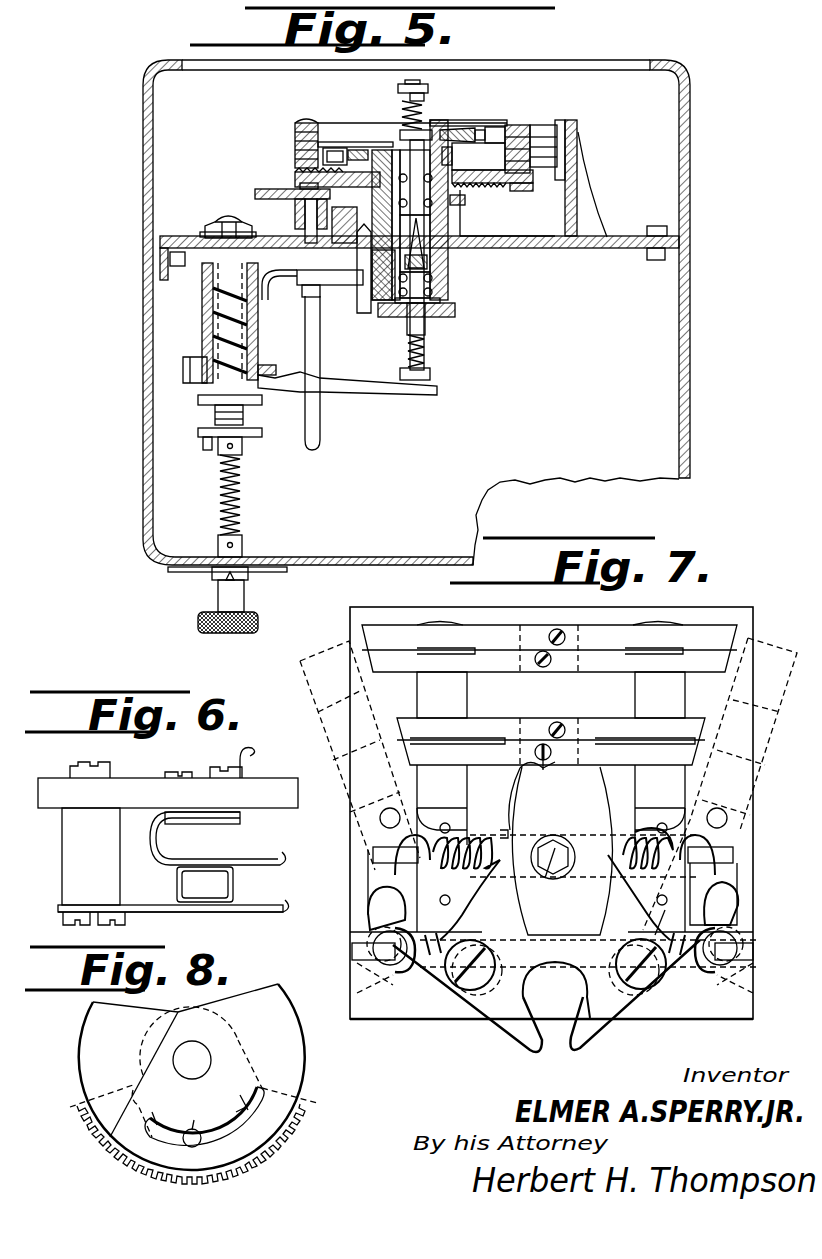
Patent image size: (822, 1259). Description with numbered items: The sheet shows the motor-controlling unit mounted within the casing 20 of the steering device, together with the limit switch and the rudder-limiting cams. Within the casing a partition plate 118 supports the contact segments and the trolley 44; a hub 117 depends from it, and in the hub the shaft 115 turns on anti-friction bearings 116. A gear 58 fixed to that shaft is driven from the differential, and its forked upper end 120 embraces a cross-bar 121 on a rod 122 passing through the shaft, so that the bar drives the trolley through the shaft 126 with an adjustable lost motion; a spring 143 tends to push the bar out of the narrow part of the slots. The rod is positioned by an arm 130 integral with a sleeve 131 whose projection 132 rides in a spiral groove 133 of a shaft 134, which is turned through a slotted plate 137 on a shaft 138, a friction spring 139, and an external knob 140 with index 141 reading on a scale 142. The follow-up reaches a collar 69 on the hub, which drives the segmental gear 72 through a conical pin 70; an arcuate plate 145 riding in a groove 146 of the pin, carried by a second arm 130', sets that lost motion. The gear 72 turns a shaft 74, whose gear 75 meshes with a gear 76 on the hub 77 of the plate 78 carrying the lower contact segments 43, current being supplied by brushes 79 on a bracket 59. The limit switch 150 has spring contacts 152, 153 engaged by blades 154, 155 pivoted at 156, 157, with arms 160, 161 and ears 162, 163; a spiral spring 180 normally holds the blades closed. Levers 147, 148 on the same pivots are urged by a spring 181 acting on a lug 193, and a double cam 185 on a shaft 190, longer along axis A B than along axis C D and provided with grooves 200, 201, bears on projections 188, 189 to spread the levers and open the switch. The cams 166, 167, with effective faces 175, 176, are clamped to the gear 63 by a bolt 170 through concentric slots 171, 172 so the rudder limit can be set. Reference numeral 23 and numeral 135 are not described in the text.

In FIG. 5, the casing 20 is at (679, 430).
In FIG. 5, the nut 23 is at (298, 231).
In FIG. 5, the lower contact segments 43 is at (499, 149).
In FIG. 5, the trolley 44 is at (352, 142).
In FIG. 5, the gear 58 is at (455, 312).
In FIG. 5, the bracket 59 is at (580, 198).
In FIG. 5, the collar 69 is at (450, 283).
In FIG. 5, the pin 70 is at (358, 259).
In FIG. 5, the segmental gear 72 is at (338, 222).
In FIG. 5, the shaft 74 is at (310, 212).
In FIG. 5, the gear 75 is at (258, 193).
In FIG. 5, the gear 76 is at (472, 198).
In FIG. 5, the hub 77 is at (455, 214).
In FIG. 5, the plate 78 is at (556, 178).
In FIG. 5, the brushes 79 is at (545, 125).
In FIG. 5, the shaft 115 is at (410, 352).
In FIG. 5, the anti-friction bearings 116 is at (394, 318).
In FIG. 5, the hub 117 is at (440, 301).
In FIG. 5, the partition plate 118 is at (580, 248).
In FIG. 5, the forked upper end 120 is at (450, 262).
In FIG. 5, the cross-bar 121 is at (452, 228).
In FIG. 5, the rod 122 is at (425, 354).
In FIG. 5, the shaft 126 is at (420, 150).
In FIG. 5, the arm 130 is at (347, 395).
In FIG. 5, the arm 130' is at (295, 293).
In FIG. 5, the sleeve 131 is at (202, 330).
In FIG. 5, the projection 132 is at (205, 376).
In FIG. 5, the spiral groove 133 is at (215, 296).
In FIG. 5, the shaft 134 is at (248, 348).
In FIG. 5, the plate 135 is at (206, 442).
In FIG. 5, the plate 137 is at (285, 379).
In FIG. 5, the shaft 138 is at (222, 508).
In FIG. 5, the spring 139 is at (240, 503).
In FIG. 5, the knob 140 is at (198, 624).
In FIG. 5, the index 141 is at (212, 580).
In FIG. 5, the scale 142 is at (272, 573).
In FIG. 5, the spring 143 is at (430, 378).
In FIG. 5, the arcuate plate 145 is at (320, 275).
In FIG. 5, the groove 146 is at (352, 300).
In FIG. 7, the lever 147 is at (635, 897).
In FIG. 7, the lever 148 is at (480, 854).
In FIG. 6, the switch 150 is at (168, 837).
In FIG. 7, the switch 150 is at (556, 616).
In FIG. 6, the spring contacts 152 is at (179, 878).
In FIG. 7, the spring contacts 152 is at (549, 647).
In FIG. 7, the spring contacts 153 is at (541, 741).
In FIG. 6, the blade 154 is at (226, 887).
In FIG. 7, the blade 154 is at (685, 691).
In FIG. 7, the blade 155 is at (417, 691).
In FIG. 7, the pivot 156 is at (671, 918).
In FIG. 7, the pivot 157 is at (455, 988).
In FIG. 7, the arm 160 is at (635, 994).
In FIG. 5, the arm 161 is at (472, 134).
In FIG. 7, the arm 161 is at (467, 998).
In FIG. 7, the ear 162 is at (753, 950).
In FIG. 7, the ear 163 is at (372, 947).
In FIG. 8, the cam 166 is at (228, 1055).
In FIG. 8, the cam 167 is at (101, 1071).
In FIG. 8, the bolt 170 is at (198, 1093).
In FIG. 8, the concentric slot 171 is at (218, 1128).
In FIG. 8, the concentric slot 172 is at (166, 1103).
In FIG. 8, the effective face 175 is at (250, 991).
In FIG. 8, the effective face 176 is at (153, 997).
In FIG. 7, the spiral spring 180 is at (405, 942).
In FIG. 7, the spring 181 is at (490, 820).
In FIG. 7, the double cam 185 is at (551, 851).
In FIG. 7, the projection 188 is at (646, 850).
In FIG. 7, the projection 189 is at (475, 855).
In FIG. 7, the shaft 190 is at (553, 871).
In FIG. 7, the lug 193 is at (735, 850).
In FIG. 7, the grooves 200 is at (548, 861).
In FIG. 7, the grooves 201 is at (590, 890).
In FIG. 8, the gear 63 is at (202, 1084).
In FIG. 7, the axis end A is at (556, 990).
In FIG. 7, the axis end B is at (551, 756).
In FIG. 7, the axis end C is at (504, 832).
In FIG. 7, the axis end D is at (618, 830).